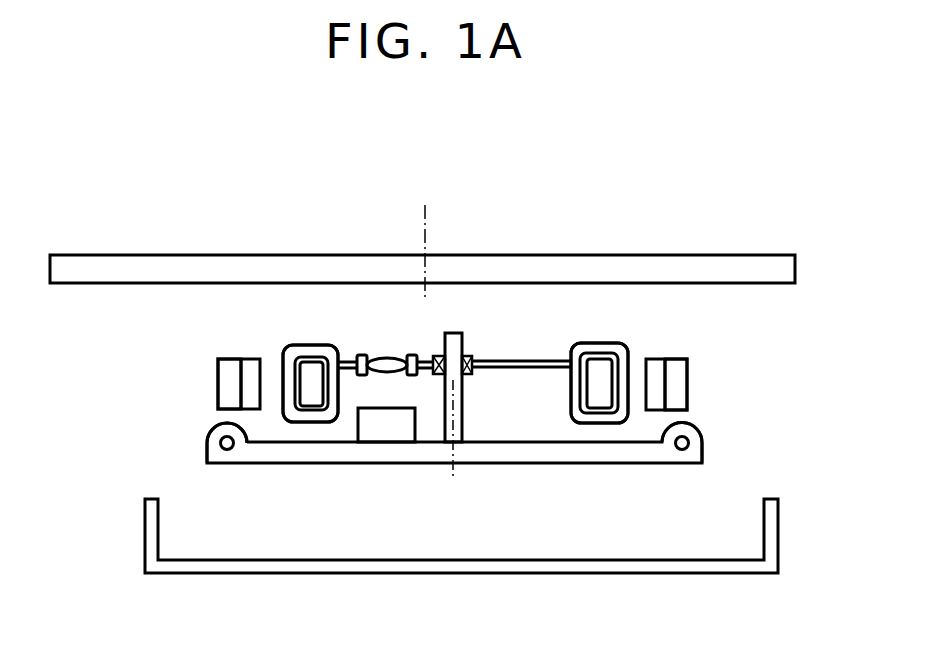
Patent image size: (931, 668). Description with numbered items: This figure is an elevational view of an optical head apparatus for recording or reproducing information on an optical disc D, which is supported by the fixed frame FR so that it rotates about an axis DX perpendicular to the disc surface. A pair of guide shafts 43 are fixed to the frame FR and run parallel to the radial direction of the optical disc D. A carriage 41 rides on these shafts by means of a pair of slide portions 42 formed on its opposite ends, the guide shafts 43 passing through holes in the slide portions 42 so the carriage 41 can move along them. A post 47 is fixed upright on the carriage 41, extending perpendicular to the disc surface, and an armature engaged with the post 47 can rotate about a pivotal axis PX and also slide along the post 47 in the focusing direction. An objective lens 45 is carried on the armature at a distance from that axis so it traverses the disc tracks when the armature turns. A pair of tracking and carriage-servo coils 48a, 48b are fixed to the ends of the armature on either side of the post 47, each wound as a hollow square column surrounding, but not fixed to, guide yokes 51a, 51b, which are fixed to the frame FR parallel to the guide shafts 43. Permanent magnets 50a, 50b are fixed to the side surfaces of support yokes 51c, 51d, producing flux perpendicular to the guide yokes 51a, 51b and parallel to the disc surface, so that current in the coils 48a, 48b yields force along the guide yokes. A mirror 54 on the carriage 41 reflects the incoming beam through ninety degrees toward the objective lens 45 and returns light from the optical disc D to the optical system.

The carriage 41 is at (572, 468).
The slide portions 42 is at (213, 432).
The guide shafts 43 is at (227, 450).
The objective lens 45 is at (397, 376).
The post 47 is at (456, 345).
The tracking and carriage-servo coil 48a is at (292, 424).
The tracking and carriage-servo coil 48b is at (571, 404).
The permanent magnet 50a is at (251, 358).
The permanent magnet 50b is at (656, 360).
The guide yoke 51a is at (312, 366).
The guide yoke 51b is at (599, 366).
The support yoke 51c is at (227, 358).
The support yoke 51d is at (682, 362).
The mirror 54 is at (363, 426).
The optical disc D is at (680, 255).
The axis DX is at (428, 220).
The pivotal axis PX is at (455, 467).
The frame FR is at (150, 536).